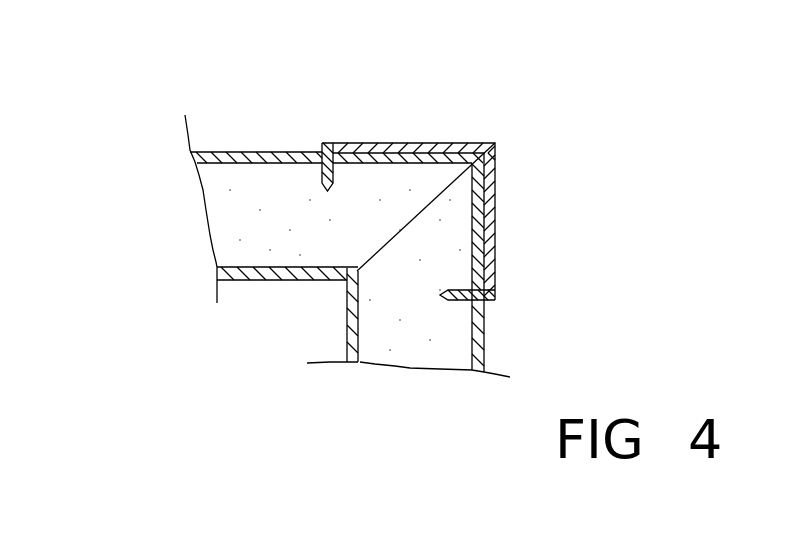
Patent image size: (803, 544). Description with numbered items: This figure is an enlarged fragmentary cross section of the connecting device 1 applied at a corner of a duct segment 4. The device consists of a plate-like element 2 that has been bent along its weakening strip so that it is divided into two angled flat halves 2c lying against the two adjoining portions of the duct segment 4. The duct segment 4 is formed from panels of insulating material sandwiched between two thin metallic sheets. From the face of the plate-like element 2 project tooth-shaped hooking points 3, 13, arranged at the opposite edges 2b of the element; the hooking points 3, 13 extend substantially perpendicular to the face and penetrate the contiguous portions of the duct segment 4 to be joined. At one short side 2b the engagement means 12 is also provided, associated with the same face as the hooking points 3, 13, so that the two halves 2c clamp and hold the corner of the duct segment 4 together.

The corner joint arrangement 1 is at (484, 116).
The plate-like element 2 is at (533, 172).
The opposite edges 2b is at (322, 143).
The angled flat halves 2c is at (393, 143).
The hooking point 3 is at (460, 299).
The duct segment 4 is at (397, 334).
The engagement means 12 is at (287, 179).
The hooking point 13 is at (322, 175).